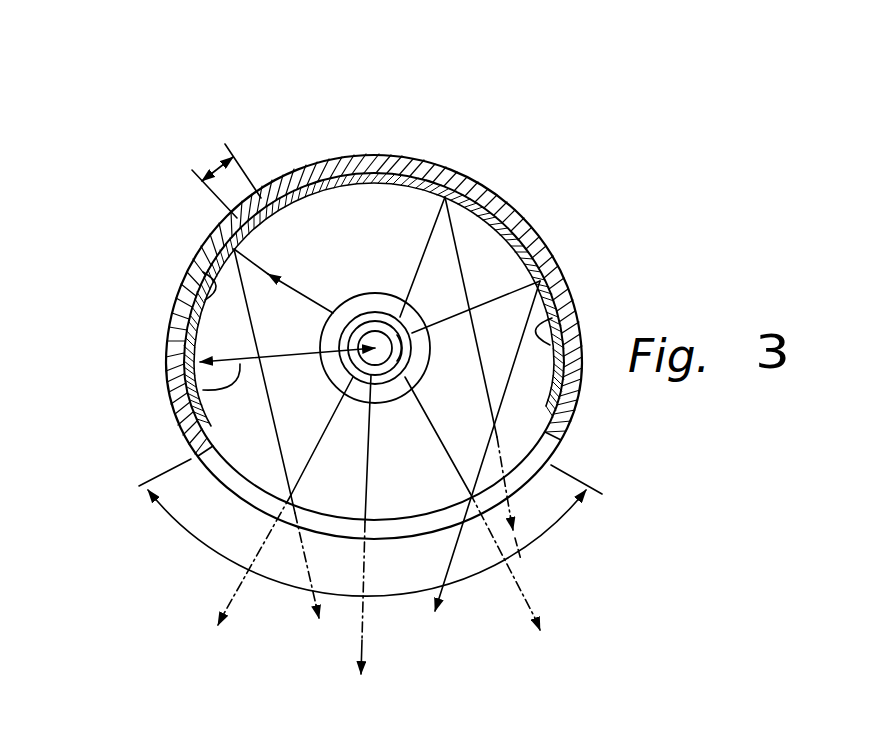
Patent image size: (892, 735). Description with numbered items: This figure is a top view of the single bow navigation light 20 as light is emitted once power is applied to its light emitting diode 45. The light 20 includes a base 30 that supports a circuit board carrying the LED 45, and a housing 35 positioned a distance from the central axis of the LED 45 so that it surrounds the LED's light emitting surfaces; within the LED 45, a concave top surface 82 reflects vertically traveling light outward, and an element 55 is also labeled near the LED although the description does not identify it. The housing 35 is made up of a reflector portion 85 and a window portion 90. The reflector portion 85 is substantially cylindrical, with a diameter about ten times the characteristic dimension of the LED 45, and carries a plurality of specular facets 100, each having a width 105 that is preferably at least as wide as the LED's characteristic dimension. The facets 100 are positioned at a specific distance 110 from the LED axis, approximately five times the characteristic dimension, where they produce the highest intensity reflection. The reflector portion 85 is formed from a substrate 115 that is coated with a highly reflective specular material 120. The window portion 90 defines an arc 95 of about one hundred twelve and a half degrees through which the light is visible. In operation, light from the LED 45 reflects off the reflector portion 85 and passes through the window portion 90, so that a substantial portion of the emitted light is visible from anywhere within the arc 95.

The navigation light 20 is at (563, 70).
The base 30 is at (505, 251).
The housing 35 is at (562, 421).
The light emitting diode 45 is at (372, 338).
The light emitting element 55 is at (390, 368).
The concave top surface 82 is at (408, 310).
The reflector portion 85 is at (368, 155).
The window portion 90 is at (523, 467).
The arc 95 is at (463, 580).
The specular facets 100 is at (190, 300).
The width 105 is at (210, 178).
The specific distance 110 is at (165, 380).
The substrate 115 is at (541, 283).
The specular reflective material 120 is at (552, 333).